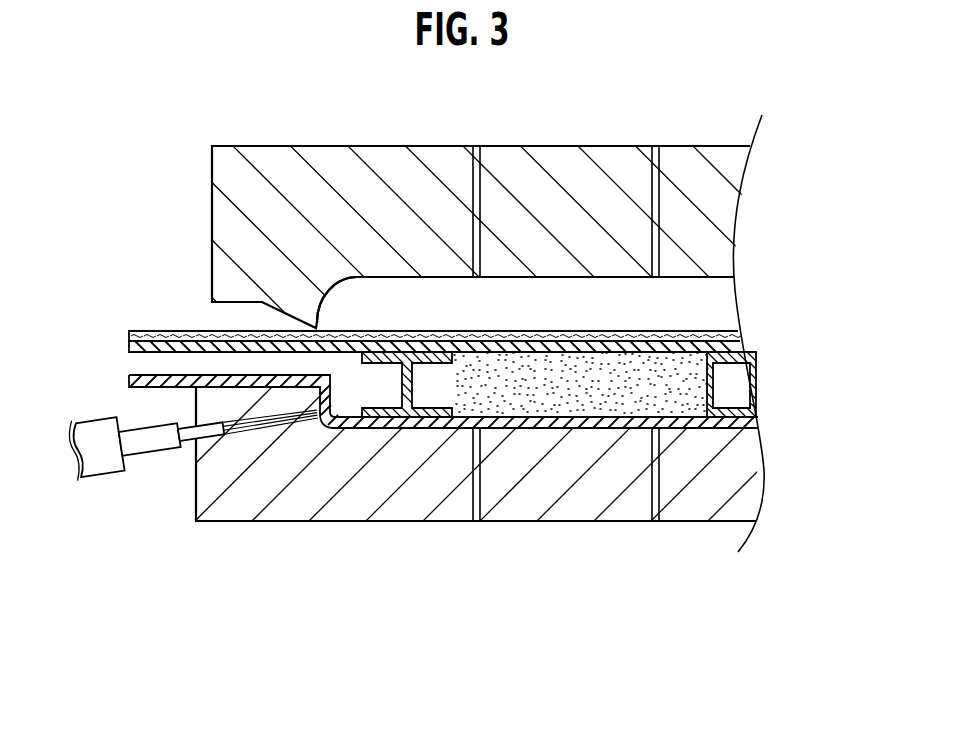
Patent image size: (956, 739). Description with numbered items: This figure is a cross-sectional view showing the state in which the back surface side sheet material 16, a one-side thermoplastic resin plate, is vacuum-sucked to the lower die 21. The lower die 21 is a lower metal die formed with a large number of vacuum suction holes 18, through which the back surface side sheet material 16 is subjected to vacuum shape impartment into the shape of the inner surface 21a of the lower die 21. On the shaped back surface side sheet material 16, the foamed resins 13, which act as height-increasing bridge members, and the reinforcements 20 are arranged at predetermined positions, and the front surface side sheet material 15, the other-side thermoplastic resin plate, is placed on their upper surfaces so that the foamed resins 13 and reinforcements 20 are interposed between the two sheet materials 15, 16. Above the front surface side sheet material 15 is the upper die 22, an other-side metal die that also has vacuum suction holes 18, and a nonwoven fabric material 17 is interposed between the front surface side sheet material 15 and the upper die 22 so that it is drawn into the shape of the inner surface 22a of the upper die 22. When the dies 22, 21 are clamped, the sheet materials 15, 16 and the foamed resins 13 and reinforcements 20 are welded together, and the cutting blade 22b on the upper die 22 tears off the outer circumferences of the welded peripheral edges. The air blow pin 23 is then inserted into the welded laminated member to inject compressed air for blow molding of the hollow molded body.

The foamed resin 13 is at (552, 388).
The front surface side sheet material 15 is at (534, 341).
The back surface side sheet material 16 is at (129, 378).
The nonwoven fabric material 17 is at (455, 331).
The vacuum suction holes 18 is at (478, 146).
The reinforcement 20 is at (408, 388).
The lower die 21 is at (303, 532).
The inner surface of the lower die 21a is at (588, 417).
The upper die 22 is at (201, 204).
The inner surface of the upper die 22a is at (678, 278).
The cutting blade 22b is at (320, 318).
The air blow pin 23 is at (93, 474).